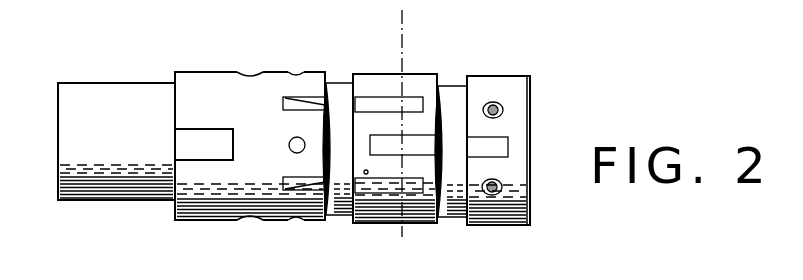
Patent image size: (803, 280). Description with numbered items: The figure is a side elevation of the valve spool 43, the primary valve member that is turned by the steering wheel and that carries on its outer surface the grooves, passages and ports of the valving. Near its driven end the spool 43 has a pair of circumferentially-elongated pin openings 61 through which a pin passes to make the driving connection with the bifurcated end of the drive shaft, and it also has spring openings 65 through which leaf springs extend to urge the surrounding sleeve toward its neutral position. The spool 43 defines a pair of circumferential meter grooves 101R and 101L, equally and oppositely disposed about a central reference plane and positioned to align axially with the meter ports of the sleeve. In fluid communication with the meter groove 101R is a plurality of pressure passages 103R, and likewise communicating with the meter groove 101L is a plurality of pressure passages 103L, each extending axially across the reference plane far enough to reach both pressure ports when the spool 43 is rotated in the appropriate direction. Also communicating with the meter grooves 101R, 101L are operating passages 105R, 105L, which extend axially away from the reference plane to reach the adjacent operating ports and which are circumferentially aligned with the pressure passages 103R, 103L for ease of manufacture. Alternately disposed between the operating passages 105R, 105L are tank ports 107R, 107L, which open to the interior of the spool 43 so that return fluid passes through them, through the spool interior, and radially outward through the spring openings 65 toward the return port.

The valve spool 43 is at (514, 139).
The pin openings 61 is at (252, 72).
The spring openings 65 is at (232, 158).
The meter groove 101L is at (391, 133).
The meter groove 101R is at (514, 139).
The pressure passages 103L is at (386, 103).
The pressure passages 103R is at (383, 146).
The operating passages 105L is at (285, 103).
The operating passages 105R is at (502, 146).
The tank ports 107L is at (298, 72).
The tank ports 107R is at (499, 192).